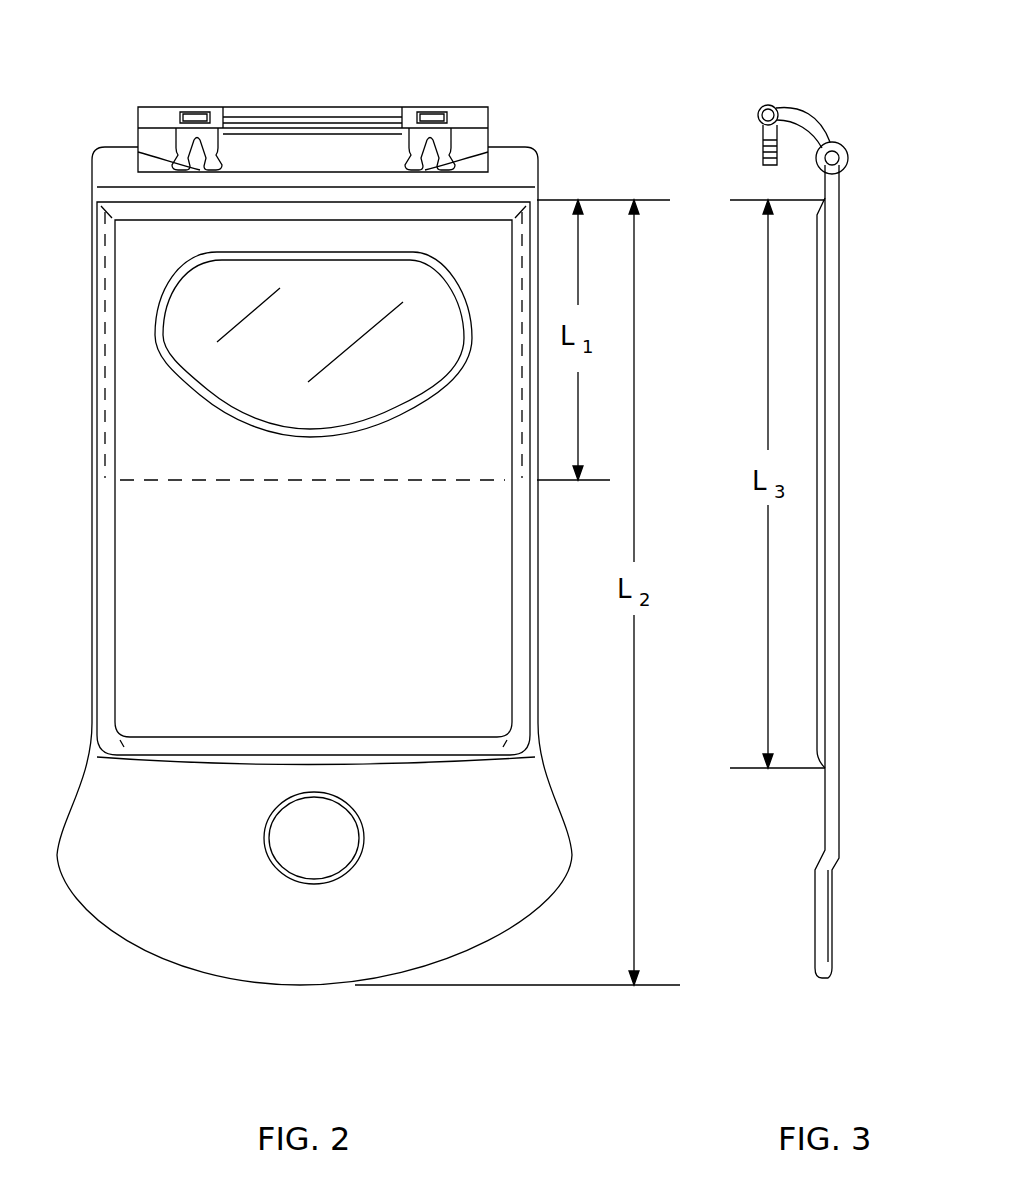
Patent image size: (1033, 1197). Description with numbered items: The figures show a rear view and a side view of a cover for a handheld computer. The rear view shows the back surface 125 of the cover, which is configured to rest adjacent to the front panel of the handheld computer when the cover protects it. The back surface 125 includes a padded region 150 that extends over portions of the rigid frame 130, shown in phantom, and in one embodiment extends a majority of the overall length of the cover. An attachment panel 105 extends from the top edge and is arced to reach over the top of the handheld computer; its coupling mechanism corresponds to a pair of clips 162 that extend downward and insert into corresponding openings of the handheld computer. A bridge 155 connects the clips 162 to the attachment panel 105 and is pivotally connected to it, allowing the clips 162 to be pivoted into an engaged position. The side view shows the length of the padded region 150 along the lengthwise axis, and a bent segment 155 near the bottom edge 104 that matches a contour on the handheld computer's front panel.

In FIG. 2, the attachment panel 105 is at (325, 107).
In FIG. 3, the attachment panel 105 is at (813, 116).
In FIG. 2, the clips 162 is at (172, 147).
In FIG. 3, the clips 162 is at (762, 157).
In FIG. 2, the rigid frame 130 is at (313, 366).
In FIG. 2, the padded region 150 is at (381, 668).
In FIG. 2, the back surface 125 is at (481, 910).
In FIG. 3, the bridge 155 is at (768, 104).
In FIG. 3, the bottom edge 104 is at (825, 985).